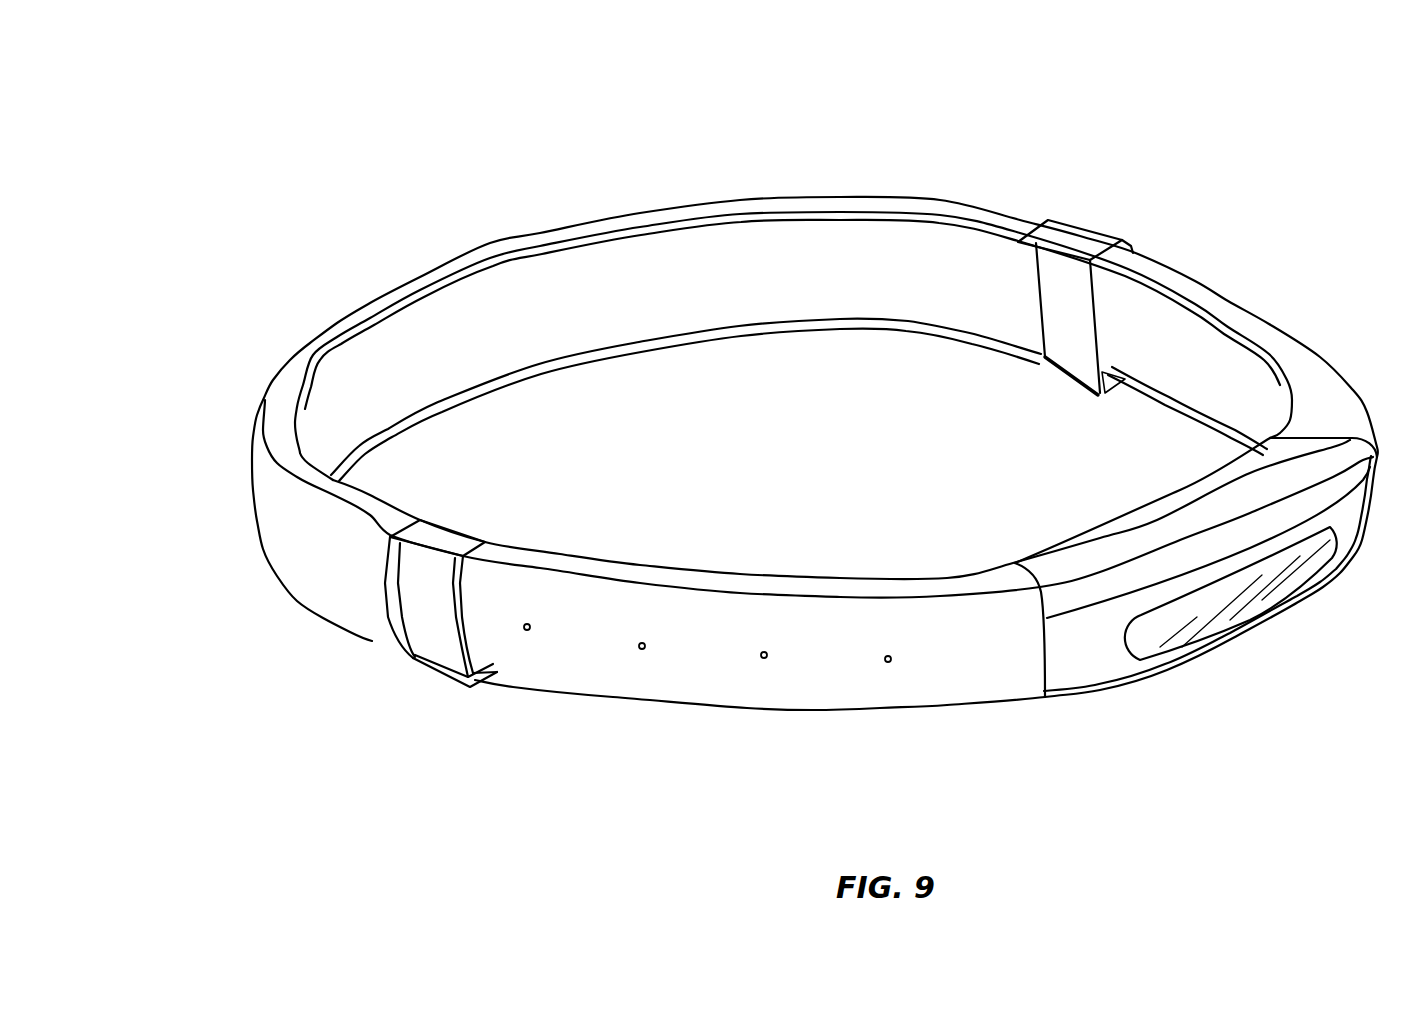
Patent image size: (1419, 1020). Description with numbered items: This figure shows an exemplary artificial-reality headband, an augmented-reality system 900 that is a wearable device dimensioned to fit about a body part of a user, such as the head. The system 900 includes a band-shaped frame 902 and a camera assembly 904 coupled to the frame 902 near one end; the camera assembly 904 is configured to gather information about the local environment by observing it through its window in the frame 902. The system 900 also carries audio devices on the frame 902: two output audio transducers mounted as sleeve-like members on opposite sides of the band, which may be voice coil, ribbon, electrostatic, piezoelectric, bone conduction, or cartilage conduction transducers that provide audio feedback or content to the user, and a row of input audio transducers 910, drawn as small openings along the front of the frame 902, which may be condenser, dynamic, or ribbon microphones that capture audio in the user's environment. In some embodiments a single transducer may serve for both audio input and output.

The augmented-reality system 900 is at (235, 158).
The frame 902 is at (763, 205).
The camera assembly 904 is at (1225, 630).
The input audio transducers 910 is at (887, 725).